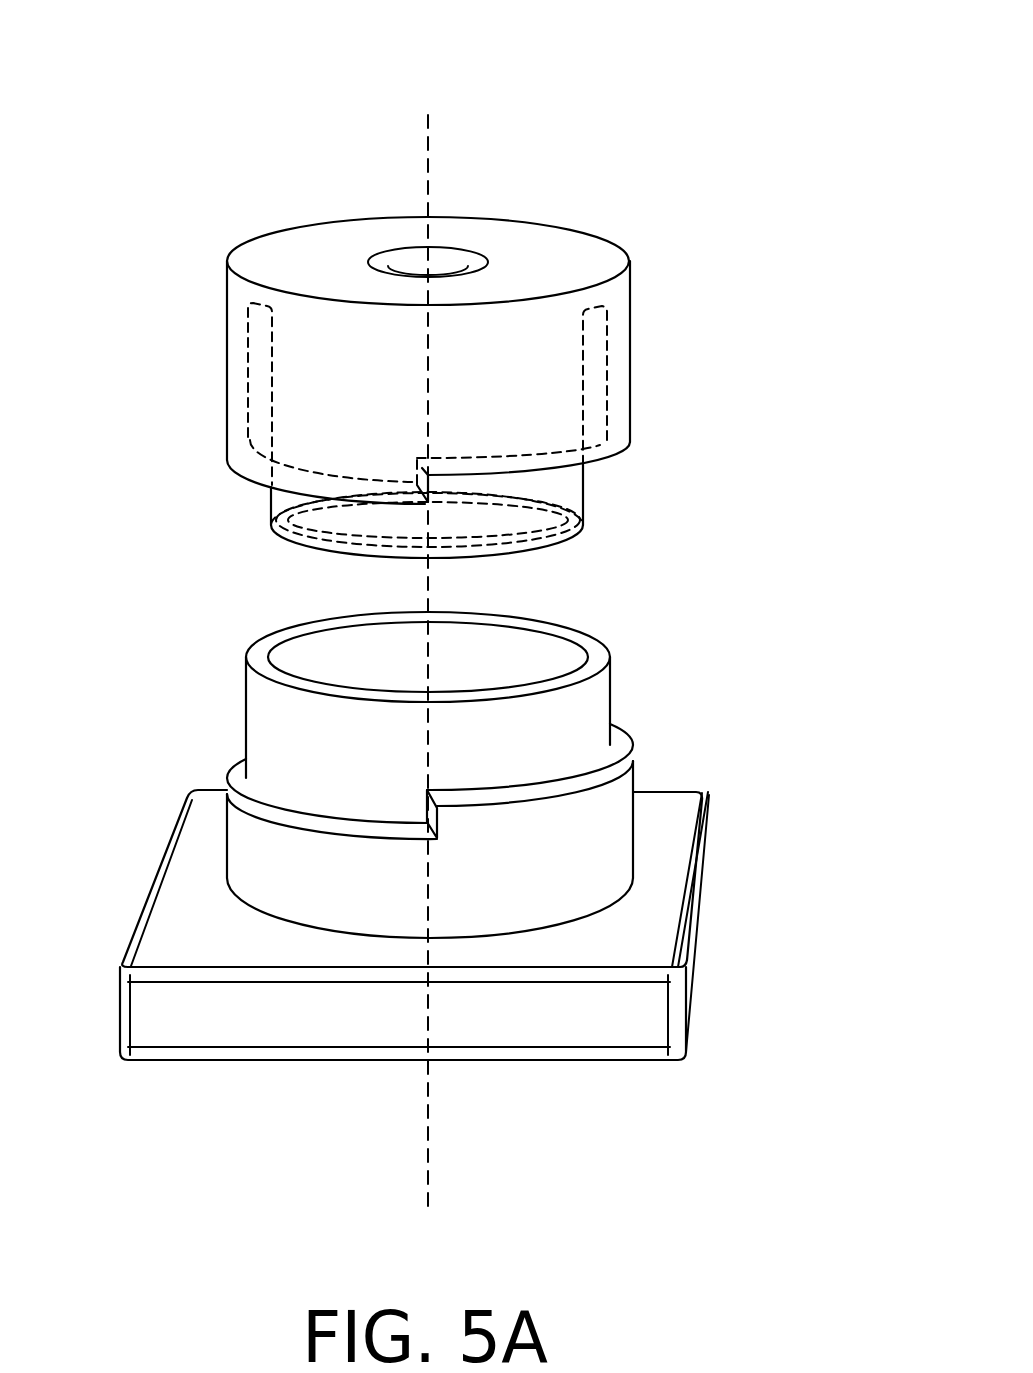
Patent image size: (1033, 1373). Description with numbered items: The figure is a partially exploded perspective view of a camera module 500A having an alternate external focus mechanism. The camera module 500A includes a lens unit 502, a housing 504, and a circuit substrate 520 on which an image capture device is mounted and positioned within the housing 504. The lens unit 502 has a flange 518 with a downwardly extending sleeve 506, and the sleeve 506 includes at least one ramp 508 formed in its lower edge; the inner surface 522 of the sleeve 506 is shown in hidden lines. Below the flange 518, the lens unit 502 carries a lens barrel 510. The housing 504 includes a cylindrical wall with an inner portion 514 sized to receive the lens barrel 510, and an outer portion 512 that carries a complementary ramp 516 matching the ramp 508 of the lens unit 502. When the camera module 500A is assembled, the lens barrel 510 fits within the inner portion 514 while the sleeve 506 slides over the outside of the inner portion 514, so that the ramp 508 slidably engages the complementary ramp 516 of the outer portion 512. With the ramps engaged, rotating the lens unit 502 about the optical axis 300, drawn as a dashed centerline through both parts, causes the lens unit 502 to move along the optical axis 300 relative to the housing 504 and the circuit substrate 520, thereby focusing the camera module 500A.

The camera module 500A is at (215, 80).
The optical axis 300 is at (425, 646).
The lens unit 502 is at (687, 283).
The housing 504 is at (768, 747).
The sleeve 506 is at (618, 392).
The ramp 508 is at (420, 497).
The lens barrel 510 is at (550, 490).
The outer portion 512 is at (612, 828).
The inner portion 514 is at (262, 684).
The complementary ramp 516 is at (453, 800).
The flange 518 is at (250, 290).
The circuit substrate 520 is at (500, 1060).
The inner surface 522 is at (250, 393).